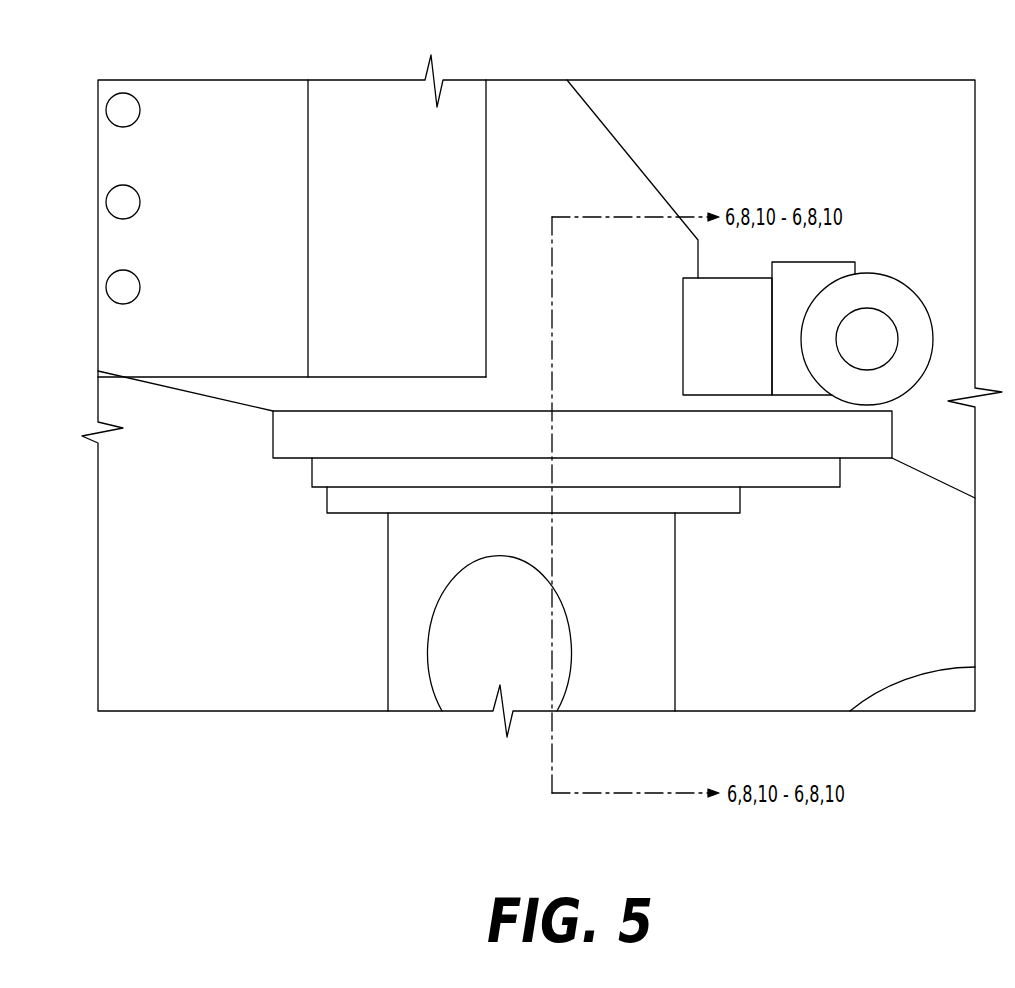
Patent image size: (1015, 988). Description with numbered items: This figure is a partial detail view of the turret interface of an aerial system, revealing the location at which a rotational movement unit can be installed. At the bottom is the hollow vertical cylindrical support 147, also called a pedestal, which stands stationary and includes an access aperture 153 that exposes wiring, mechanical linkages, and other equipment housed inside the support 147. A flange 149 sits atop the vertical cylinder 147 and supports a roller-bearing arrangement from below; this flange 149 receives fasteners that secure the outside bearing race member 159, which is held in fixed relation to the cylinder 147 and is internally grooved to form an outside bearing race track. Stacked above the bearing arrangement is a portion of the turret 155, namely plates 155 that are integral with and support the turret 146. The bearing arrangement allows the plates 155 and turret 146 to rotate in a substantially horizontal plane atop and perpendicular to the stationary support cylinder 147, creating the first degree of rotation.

The turret 146 is at (782, 158).
The turret plates 155 is at (292, 437).
The outside bearing race member 159 is at (840, 477).
The flange 149 is at (347, 513).
The hollow vertical cylindrical support 147 is at (383, 680).
The access aperture 153 is at (445, 633).